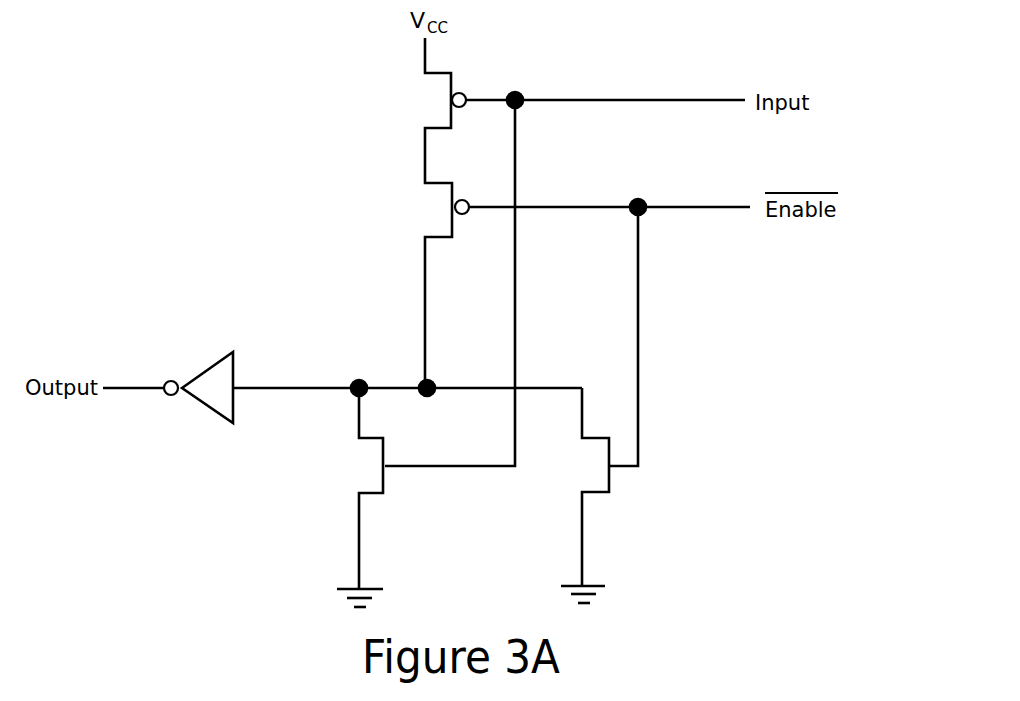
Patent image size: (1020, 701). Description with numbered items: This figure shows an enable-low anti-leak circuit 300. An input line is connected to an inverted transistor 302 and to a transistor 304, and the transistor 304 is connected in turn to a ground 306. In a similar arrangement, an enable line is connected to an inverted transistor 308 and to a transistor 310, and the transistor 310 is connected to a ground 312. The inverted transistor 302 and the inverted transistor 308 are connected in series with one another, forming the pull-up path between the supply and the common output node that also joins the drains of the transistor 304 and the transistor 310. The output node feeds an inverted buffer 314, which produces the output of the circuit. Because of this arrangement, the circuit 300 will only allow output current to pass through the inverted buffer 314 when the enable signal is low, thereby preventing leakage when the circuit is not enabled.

The enable-low anti-leak circuit 300 is at (200, 87).
The inverted transistor 302 is at (446, 72).
The transistor 304 is at (388, 478).
The ground 306 is at (349, 587).
The inverted transistor 308 is at (455, 228).
The transistor 310 is at (613, 478).
The ground 312 is at (598, 598).
The inverted buffer 314 is at (218, 362).